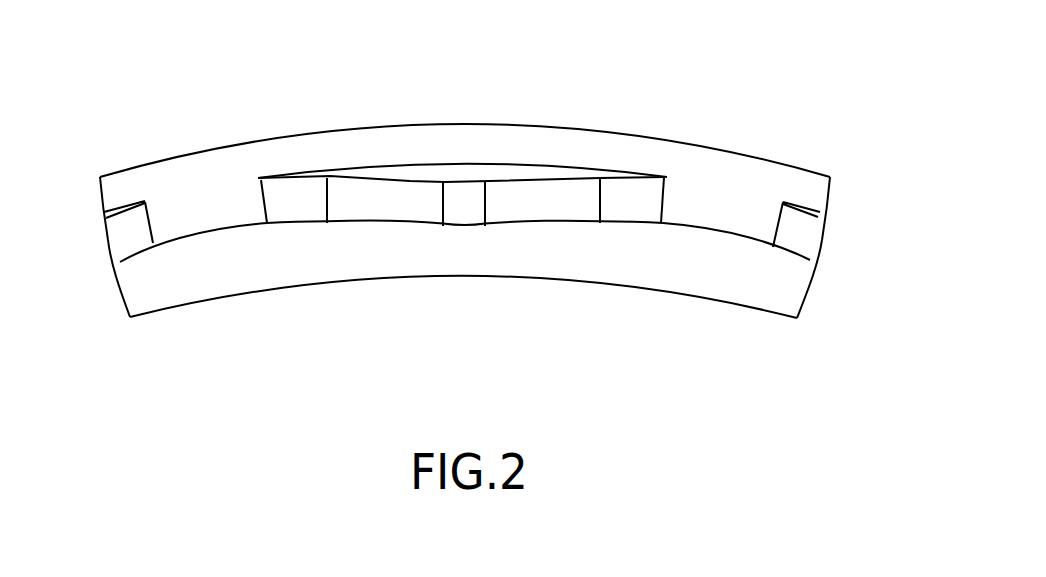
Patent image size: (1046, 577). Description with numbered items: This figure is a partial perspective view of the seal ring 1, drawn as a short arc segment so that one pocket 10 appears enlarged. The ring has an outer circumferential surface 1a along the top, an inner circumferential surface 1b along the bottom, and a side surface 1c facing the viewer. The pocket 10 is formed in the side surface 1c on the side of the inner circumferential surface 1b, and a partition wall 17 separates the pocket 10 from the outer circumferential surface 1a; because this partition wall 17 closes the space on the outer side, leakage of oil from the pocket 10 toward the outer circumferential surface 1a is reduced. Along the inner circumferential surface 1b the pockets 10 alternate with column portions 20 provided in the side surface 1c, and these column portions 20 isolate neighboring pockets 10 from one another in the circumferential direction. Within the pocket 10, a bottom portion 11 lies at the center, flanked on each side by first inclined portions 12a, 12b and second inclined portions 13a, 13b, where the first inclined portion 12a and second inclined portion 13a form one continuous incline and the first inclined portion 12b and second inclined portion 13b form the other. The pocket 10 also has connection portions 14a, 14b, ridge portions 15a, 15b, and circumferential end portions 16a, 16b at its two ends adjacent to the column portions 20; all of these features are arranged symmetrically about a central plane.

The seal ring 1 is at (724, 68).
The outer circumferential surface 1a is at (541, 127).
The inner circumferential surface 1b is at (763, 283).
The side surface 1c is at (722, 172).
The pocket 10 is at (463, 168).
The bottom portion 11 is at (453, 210).
The first inclined portion 12a is at (380, 213).
The first inclined portion 12b is at (540, 210).
The second inclined portion 13a is at (290, 203).
The second inclined portion 13b is at (625, 203).
The connection portion 14a is at (443, 185).
The connection portion 14b is at (487, 185).
The ridge portion 15a is at (327, 181).
The ridge portion 15b is at (601, 180).
The circumferential end portion 16a is at (262, 183).
The circumferential end portion 16b is at (664, 180).
The partition wall 17 is at (393, 178).
The column portion 20 is at (222, 314).